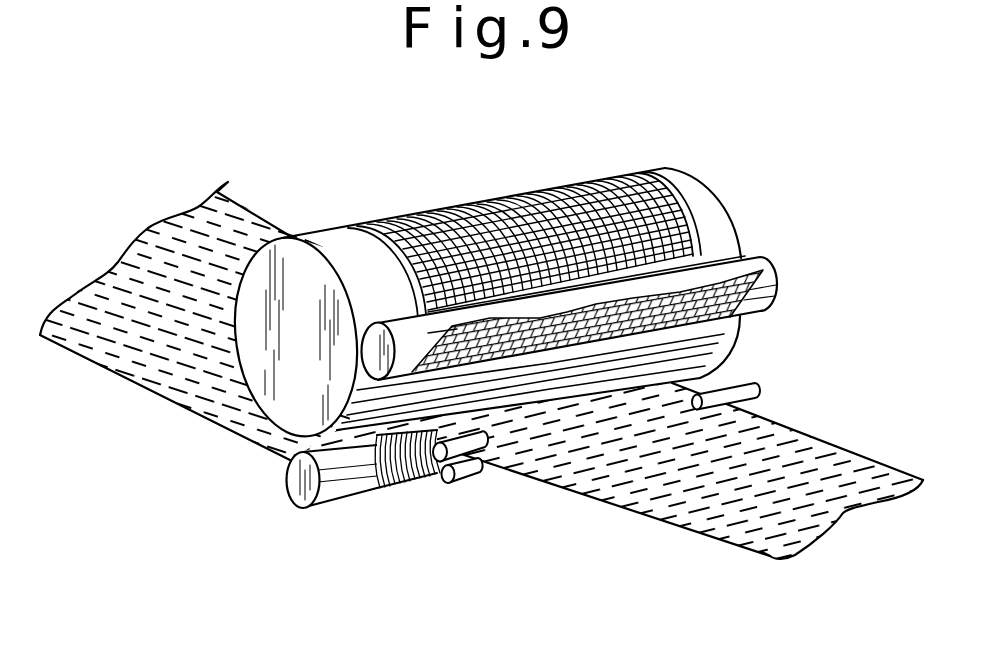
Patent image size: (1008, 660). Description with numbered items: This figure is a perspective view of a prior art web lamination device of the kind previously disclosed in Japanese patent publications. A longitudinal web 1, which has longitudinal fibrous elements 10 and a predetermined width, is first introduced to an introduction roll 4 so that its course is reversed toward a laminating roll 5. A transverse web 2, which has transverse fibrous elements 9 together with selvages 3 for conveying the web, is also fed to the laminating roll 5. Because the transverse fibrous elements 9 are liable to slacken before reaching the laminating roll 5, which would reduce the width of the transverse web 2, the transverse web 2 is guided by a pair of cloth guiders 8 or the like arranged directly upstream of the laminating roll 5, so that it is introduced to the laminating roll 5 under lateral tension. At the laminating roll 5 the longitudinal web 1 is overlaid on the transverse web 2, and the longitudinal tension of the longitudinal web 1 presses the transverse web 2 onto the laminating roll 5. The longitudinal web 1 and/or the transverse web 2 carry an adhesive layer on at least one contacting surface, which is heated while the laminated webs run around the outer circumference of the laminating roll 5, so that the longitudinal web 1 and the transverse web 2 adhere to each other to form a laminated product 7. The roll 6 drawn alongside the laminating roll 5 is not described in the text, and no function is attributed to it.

The longitudinal web 1 is at (105, 368).
The transverse web 2 is at (848, 512).
The selvages 3 is at (820, 444).
The introduction roll 4 is at (300, 493).
The laminating roll 5 is at (718, 229).
The roll 6 is at (778, 295).
The laminated product 7 is at (730, 261).
The cloth guiders 8 is at (442, 484).
The transverse fibrous elements 9 is at (745, 486).
The longitudinal fibrous elements 10 is at (185, 340).